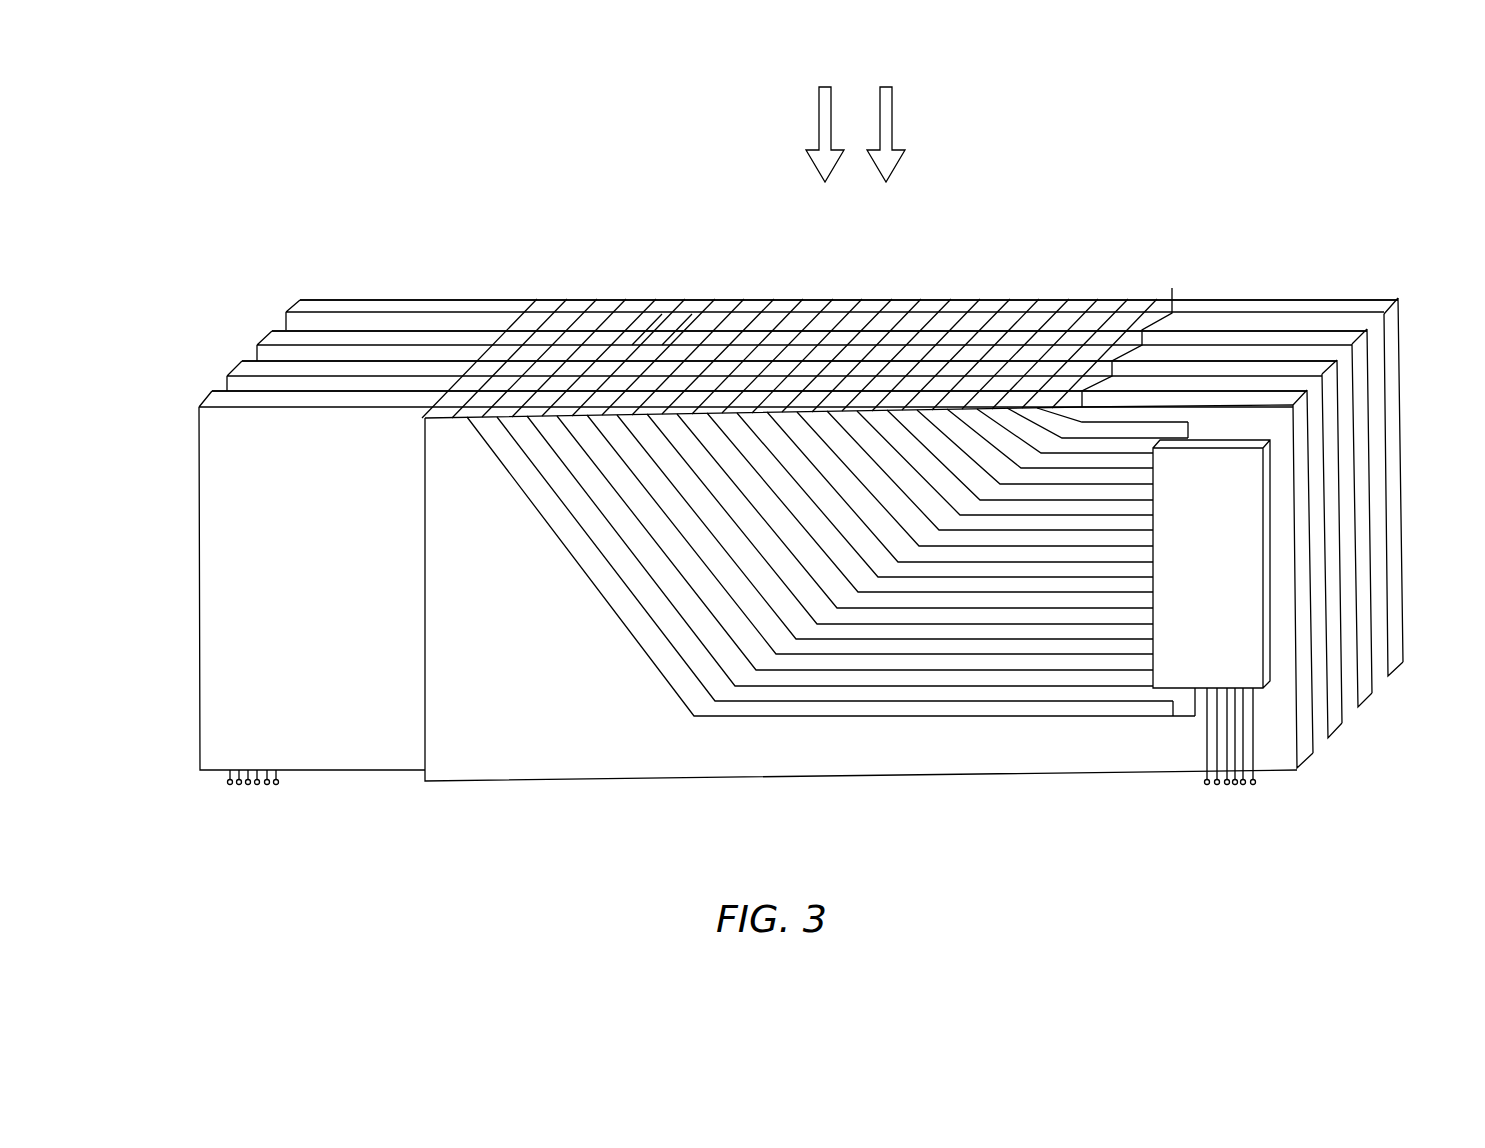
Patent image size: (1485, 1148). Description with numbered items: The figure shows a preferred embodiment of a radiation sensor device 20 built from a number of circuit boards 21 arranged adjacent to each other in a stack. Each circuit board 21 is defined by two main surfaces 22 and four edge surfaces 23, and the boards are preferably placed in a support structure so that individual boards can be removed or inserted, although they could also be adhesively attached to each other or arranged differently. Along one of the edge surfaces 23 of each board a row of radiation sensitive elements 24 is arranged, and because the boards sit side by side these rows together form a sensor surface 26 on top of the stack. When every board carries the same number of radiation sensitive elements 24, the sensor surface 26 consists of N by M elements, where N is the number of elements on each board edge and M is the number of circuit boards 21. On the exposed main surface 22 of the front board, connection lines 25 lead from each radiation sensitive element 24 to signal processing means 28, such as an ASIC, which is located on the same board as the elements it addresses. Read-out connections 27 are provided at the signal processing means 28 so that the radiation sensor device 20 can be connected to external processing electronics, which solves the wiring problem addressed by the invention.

The radiation sensor device 20 is at (1152, 174).
The circuit board 21 is at (257, 343).
The main surface 22 is at (210, 568).
The edge surface 23 is at (403, 302).
The radiation sensitive element 24 is at (934, 300).
The connection line 25 is at (652, 665).
The sensor surface 26 is at (645, 306).
The read-out connection 27 is at (225, 778).
The signal processing means 28 is at (1268, 690).